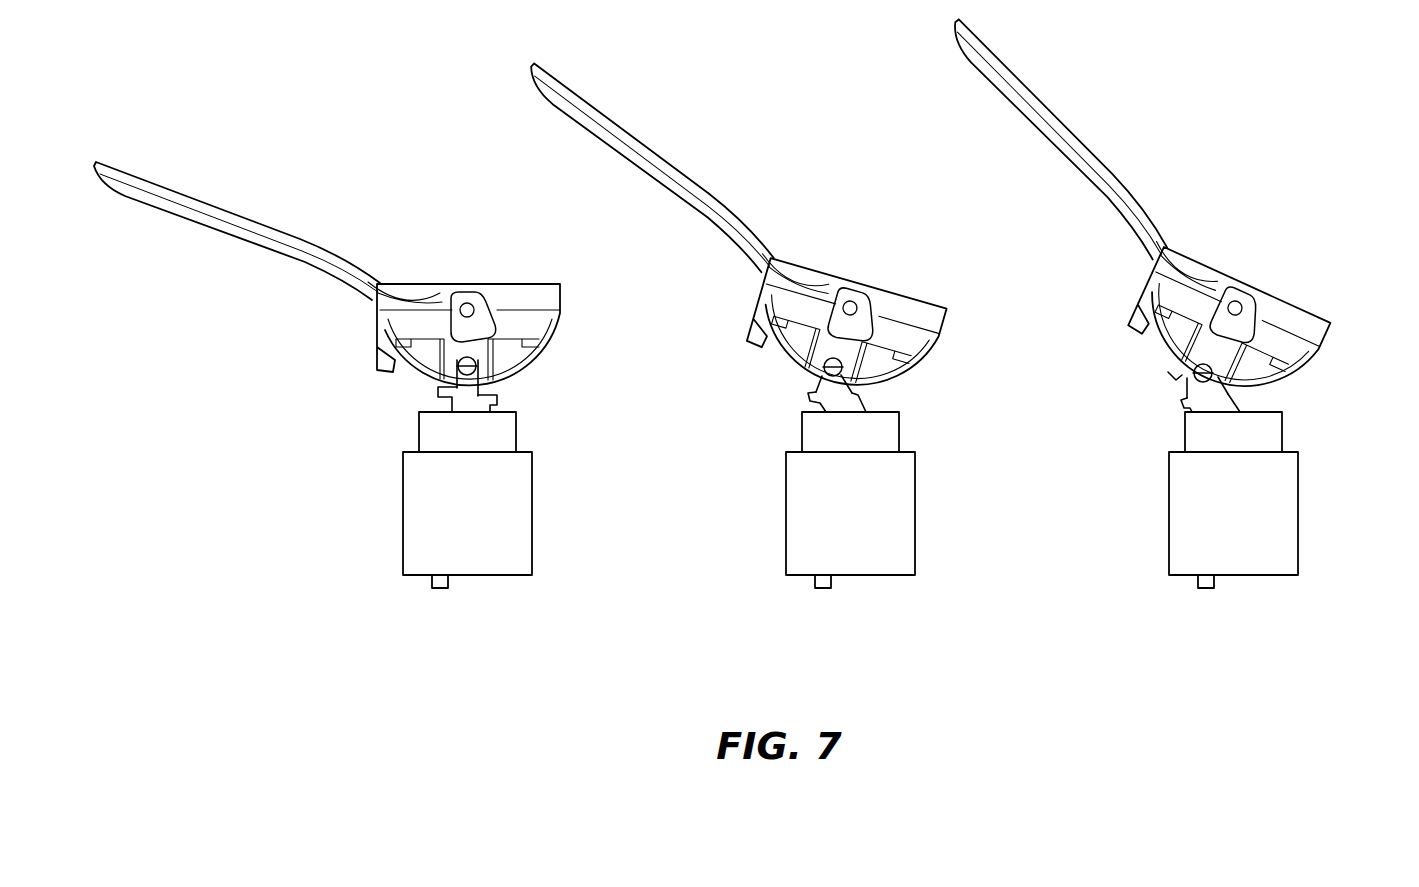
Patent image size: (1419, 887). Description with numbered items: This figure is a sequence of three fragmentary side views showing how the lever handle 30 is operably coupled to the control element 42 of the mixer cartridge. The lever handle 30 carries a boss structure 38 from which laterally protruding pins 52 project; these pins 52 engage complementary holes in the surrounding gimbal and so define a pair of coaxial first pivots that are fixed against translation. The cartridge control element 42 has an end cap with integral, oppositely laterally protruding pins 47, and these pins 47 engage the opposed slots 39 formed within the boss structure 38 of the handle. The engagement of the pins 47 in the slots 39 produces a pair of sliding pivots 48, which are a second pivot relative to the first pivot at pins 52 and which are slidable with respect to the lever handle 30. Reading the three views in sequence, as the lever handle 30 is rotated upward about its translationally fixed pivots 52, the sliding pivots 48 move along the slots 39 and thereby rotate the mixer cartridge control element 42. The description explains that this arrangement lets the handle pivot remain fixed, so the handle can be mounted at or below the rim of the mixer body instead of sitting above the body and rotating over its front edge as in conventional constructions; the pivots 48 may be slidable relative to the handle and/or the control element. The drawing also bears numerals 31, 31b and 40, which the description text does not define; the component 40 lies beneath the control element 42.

The lever handle 30 is at (358, 256).
The lever arm 31 is at (256, 228).
The lever arm surface 31b is at (141, 192).
The boss structure 38 is at (545, 323).
The opposed slots 39 is at (476, 364).
The switch base 40 is at (512, 517).
The cartridge control element 42 is at (485, 402).
The laterally protruding pins 47 is at (472, 371).
The sliding pivots 48 is at (1172, 379).
The pins 52 is at (467, 304).